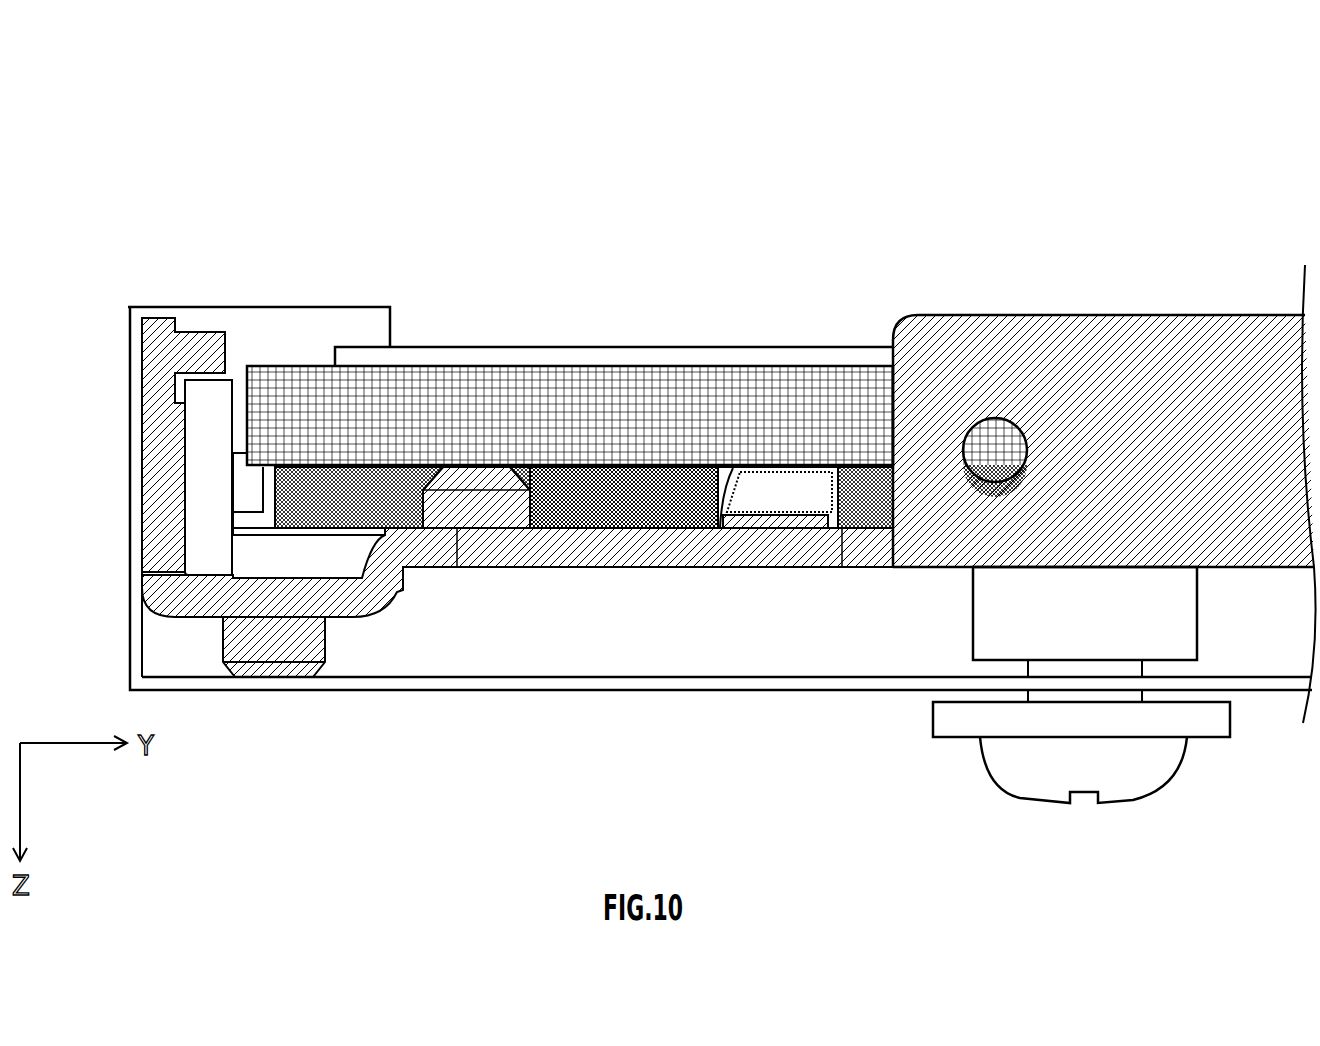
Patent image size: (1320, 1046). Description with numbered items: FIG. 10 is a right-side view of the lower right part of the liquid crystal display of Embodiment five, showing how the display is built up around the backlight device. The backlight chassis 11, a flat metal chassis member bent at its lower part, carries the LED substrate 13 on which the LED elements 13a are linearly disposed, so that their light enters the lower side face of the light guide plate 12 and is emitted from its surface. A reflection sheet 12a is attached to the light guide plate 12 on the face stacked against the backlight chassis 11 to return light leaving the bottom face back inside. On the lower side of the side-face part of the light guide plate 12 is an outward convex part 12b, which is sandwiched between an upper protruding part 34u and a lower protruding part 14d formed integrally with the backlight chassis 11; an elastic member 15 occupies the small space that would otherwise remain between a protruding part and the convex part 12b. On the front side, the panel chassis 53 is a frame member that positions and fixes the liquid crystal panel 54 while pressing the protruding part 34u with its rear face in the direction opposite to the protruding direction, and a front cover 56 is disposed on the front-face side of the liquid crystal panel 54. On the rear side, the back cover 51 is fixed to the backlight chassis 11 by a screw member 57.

The backlight chassis 11 is at (597, 545).
The light guide plate 12 is at (338, 493).
The reflection sheet 12a is at (257, 537).
The convex part 12b is at (626, 447).
The LED substrate 13 is at (213, 420).
The LED elements 13a is at (248, 475).
The protruding part 14d is at (482, 415).
The elastic member 15 is at (810, 487).
The protruding part 34u is at (745, 528).
The back cover 51 is at (434, 683).
The panel chassis 53 is at (347, 397).
The liquid crystal panel 54 is at (574, 357).
The front cover 56 is at (195, 320).
The screw member 57 is at (1040, 765).